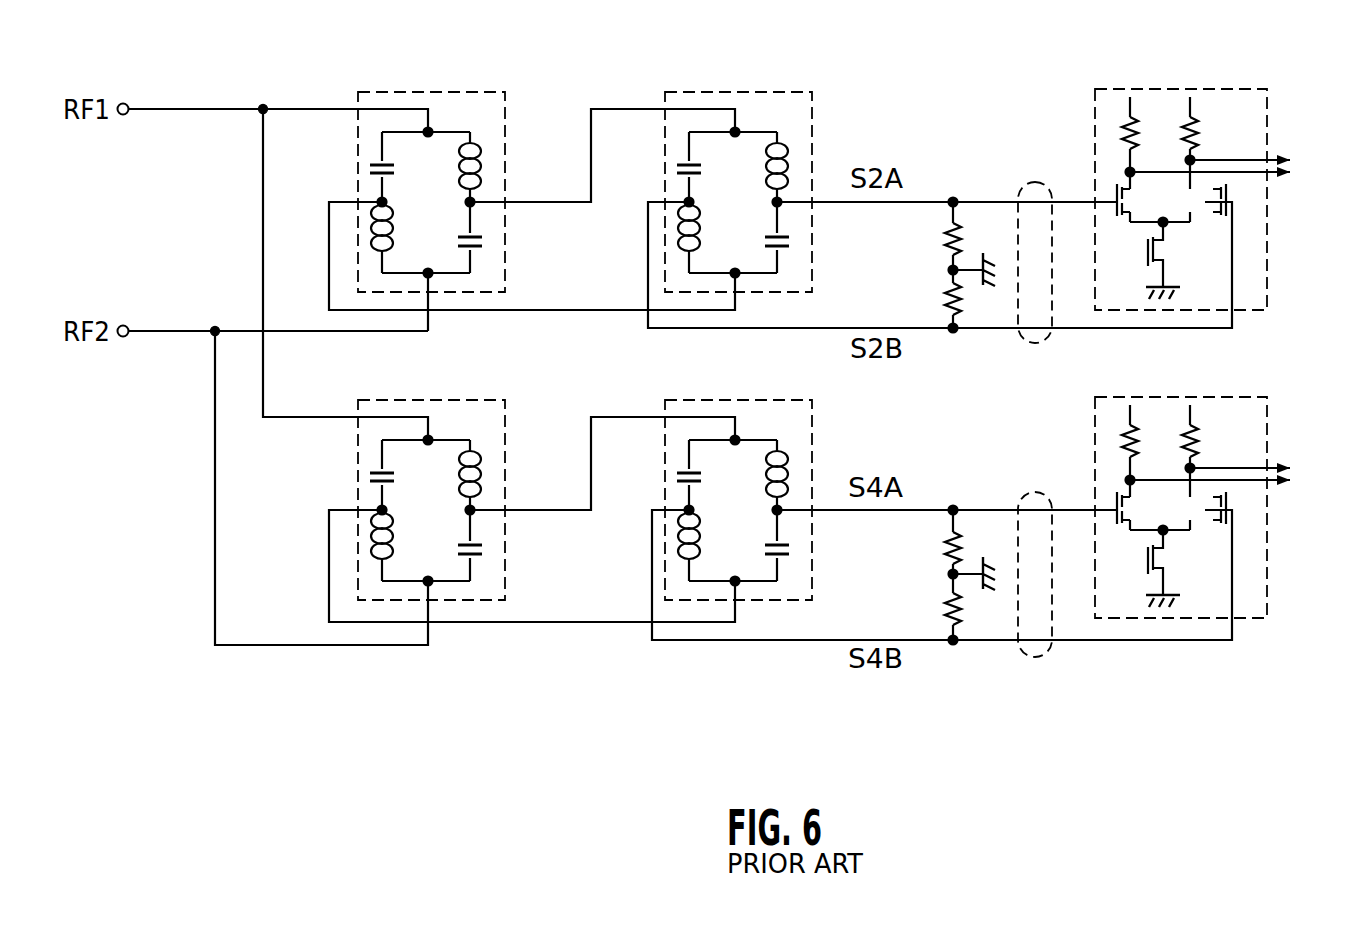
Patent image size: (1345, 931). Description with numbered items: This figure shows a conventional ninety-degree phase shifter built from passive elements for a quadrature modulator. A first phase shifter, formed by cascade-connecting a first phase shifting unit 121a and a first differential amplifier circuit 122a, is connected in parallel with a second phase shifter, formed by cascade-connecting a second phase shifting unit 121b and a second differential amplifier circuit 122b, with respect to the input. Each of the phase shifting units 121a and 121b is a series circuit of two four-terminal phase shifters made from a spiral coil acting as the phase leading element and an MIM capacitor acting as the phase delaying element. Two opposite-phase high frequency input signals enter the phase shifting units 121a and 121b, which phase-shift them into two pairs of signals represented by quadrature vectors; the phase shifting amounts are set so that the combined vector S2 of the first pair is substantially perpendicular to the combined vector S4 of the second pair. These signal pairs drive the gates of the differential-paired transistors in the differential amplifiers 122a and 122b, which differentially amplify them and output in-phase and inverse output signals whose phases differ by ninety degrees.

The first phase shifting unit 121a is at (882, 65).
The second phase shifting unit 121b is at (868, 695).
The first differential amplifier circuit 122a is at (1280, 60).
The second differential amplifier circuit 122b is at (1280, 692).
The combined vector S2 is at (1020, 190).
The combined vector S4 is at (1020, 498).